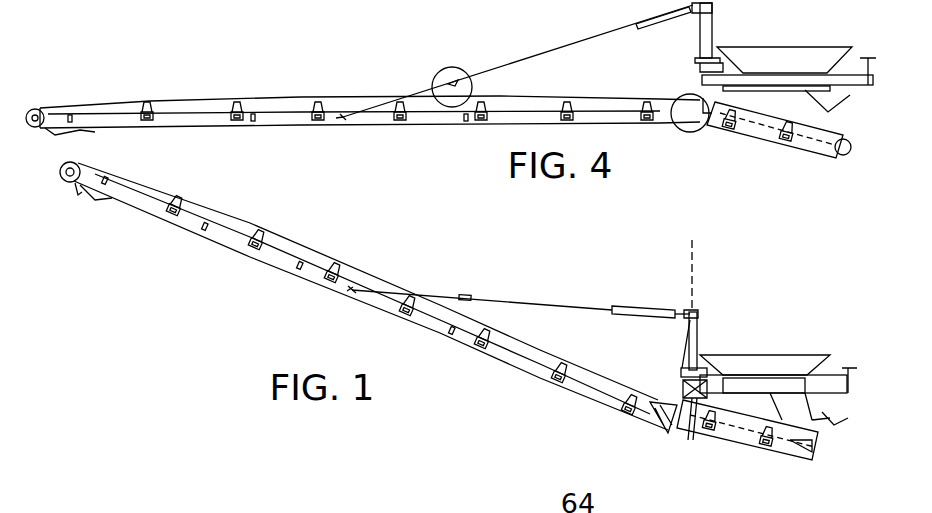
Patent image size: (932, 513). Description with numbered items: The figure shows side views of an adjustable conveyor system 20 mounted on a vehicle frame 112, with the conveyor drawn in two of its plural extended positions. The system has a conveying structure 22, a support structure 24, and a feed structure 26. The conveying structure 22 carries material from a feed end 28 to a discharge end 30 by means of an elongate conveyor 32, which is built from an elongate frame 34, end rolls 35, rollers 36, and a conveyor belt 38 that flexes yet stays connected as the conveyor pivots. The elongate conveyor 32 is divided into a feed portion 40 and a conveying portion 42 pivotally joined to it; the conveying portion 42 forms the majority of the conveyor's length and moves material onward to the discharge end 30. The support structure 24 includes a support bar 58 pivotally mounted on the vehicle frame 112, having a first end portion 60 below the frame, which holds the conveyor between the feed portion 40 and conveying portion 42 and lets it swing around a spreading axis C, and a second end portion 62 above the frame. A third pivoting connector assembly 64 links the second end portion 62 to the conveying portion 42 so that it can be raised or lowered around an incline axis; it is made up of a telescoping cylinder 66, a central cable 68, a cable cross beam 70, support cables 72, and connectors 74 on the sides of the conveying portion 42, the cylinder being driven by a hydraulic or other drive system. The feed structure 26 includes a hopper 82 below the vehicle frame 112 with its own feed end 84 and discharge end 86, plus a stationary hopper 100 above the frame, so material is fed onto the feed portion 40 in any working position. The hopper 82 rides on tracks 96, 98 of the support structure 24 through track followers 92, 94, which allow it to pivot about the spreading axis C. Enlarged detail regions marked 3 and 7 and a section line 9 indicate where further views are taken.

In FIG. 4, the adjustable conveyor system 20 is at (237, 53).
In FIG. 1, the adjustable conveyor system 20 is at (152, 272).
In FIG. 4, the conveying structure 22 is at (185, 82).
In FIG. 1, the conveying structure 22 is at (438, 275).
In FIG. 4, the support structure 24 is at (692, 17).
In FIG. 1, the support structure 24 is at (712, 322).
In FIG. 4, the feed structure 26 is at (857, 47).
In FIG. 1, the feed structure 26 is at (780, 338).
In FIG. 1, the feed end 28 is at (835, 437).
In FIG. 1, the discharge end 30 is at (78, 165).
In FIG. 1, the elongate conveyor 32 is at (298, 246).
In FIG. 1, the elongate frame 34 is at (437, 325).
In FIG. 1, the end rolls 35 is at (62, 176).
In FIG. 1, the rollers 36 is at (258, 238).
In FIG. 4, the conveyor belt 38 is at (528, 97).
In FIG. 1, the conveyor belt 38 is at (525, 343).
In FIG. 4, the feed portion 40 is at (775, 160).
In FIG. 1, the feed portion 40 is at (800, 473).
In FIG. 4, the conveying portion 42 is at (418, 140).
In FIG. 1, the conveying portion 42 is at (312, 302).
In FIG. 4, the detail area 3 is at (685, 125).
In FIG. 4, the detail area 7 is at (438, 75).
In FIG. 1, the section line 9- 9 is at (667, 392).
In FIG. 1, the support bar 58 is at (700, 345).
In FIG. 1, the first end portion 60 is at (692, 440).
In FIG. 1, the second end portion 62 is at (688, 310).
In FIG. 1, the third pivoting connector assembly 64 is at (647, 297).
In FIG. 1, the telescoping cylinder 66 is at (643, 313).
In FIG. 1, the central cable 68 is at (577, 309).
In FIG. 1, the cable cross beam 70 is at (470, 297).
In FIG. 1, the support cables 72 is at (412, 297).
In FIG. 1, the connectors 74 is at (356, 292).
In FIG. 1, the hopper 82 is at (743, 408).
In FIG. 1, the feed end 84 is at (780, 438).
In FIG. 1, the discharge end 86 is at (750, 444).
In FIG. 1, the track follower 92 is at (662, 431).
In FIG. 1, the track follower 94 is at (822, 420).
In FIG. 1, the track 96 is at (683, 385).
In FIG. 1, the track 98 is at (858, 375).
In FIG. 1, the stationary hopper 100 is at (800, 365).
In FIG. 4, the vehicle frame 112 is at (855, 82).
In FIG. 1, the vehicle frame 112 is at (832, 385).
In FIG. 1, the spreading axis C is at (698, 272).